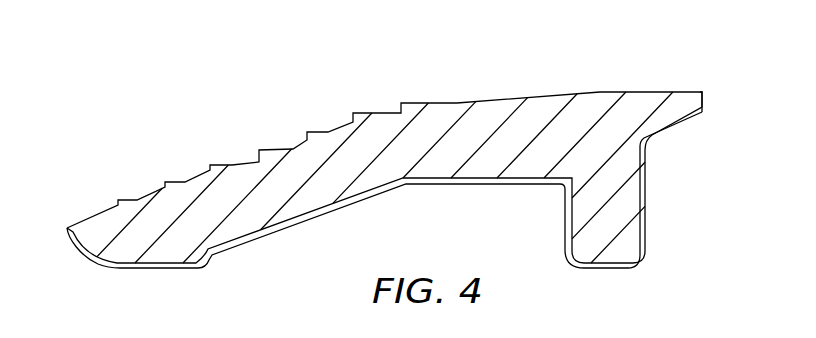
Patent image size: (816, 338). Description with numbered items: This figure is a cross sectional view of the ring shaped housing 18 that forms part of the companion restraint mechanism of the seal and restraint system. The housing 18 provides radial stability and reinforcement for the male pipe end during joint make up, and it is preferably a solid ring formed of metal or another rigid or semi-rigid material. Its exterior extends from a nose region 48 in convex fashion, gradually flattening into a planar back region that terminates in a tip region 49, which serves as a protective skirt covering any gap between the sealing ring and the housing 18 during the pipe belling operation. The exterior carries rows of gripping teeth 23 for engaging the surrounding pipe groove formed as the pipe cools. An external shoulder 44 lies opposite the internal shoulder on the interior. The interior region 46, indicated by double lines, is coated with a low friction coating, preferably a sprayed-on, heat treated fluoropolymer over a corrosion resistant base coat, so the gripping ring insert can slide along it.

The ring shaped housing 18 is at (431, 76).
The gripping teeth 23 is at (267, 148).
The external shoulder 44 is at (642, 198).
The low friction coated interior region 46 is at (296, 228).
The nose region 48 is at (87, 238).
The tip region 49 is at (704, 92).